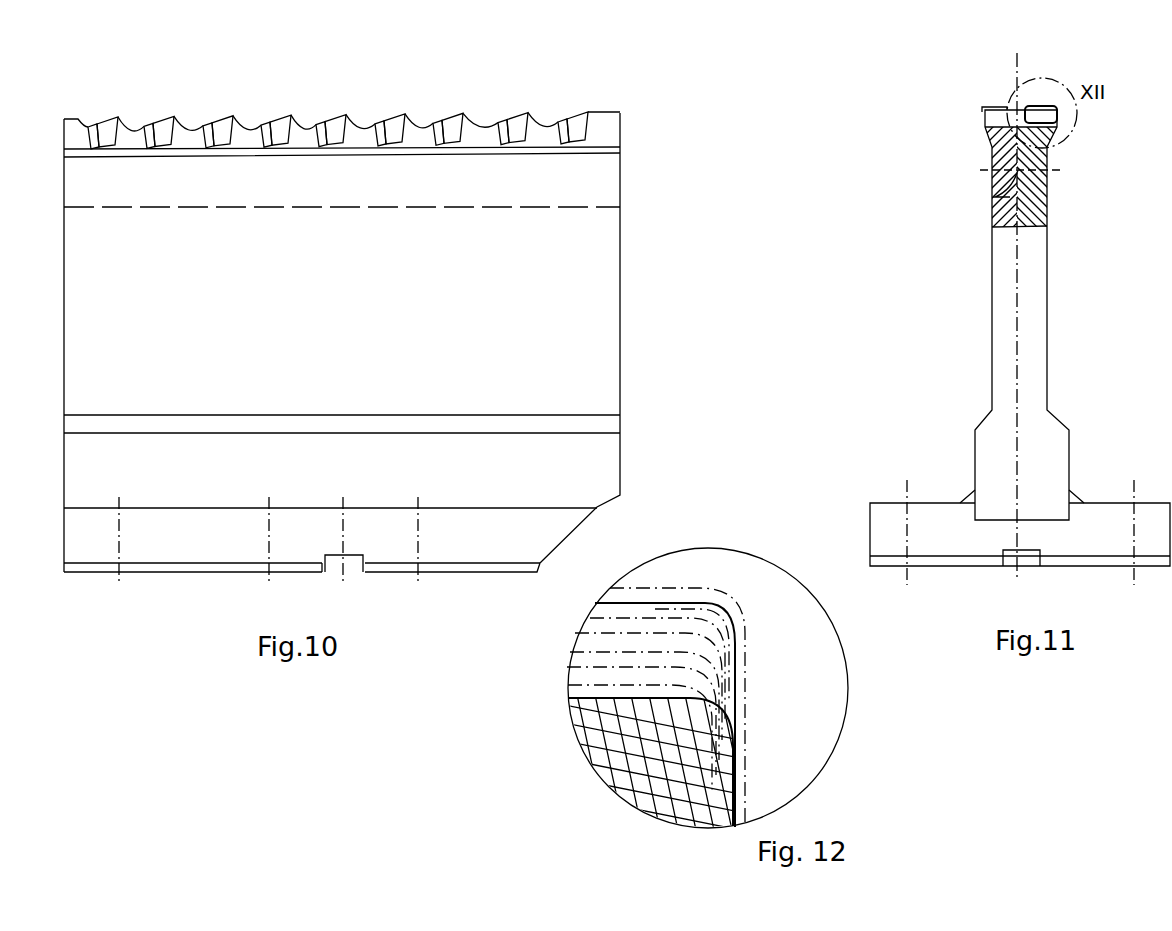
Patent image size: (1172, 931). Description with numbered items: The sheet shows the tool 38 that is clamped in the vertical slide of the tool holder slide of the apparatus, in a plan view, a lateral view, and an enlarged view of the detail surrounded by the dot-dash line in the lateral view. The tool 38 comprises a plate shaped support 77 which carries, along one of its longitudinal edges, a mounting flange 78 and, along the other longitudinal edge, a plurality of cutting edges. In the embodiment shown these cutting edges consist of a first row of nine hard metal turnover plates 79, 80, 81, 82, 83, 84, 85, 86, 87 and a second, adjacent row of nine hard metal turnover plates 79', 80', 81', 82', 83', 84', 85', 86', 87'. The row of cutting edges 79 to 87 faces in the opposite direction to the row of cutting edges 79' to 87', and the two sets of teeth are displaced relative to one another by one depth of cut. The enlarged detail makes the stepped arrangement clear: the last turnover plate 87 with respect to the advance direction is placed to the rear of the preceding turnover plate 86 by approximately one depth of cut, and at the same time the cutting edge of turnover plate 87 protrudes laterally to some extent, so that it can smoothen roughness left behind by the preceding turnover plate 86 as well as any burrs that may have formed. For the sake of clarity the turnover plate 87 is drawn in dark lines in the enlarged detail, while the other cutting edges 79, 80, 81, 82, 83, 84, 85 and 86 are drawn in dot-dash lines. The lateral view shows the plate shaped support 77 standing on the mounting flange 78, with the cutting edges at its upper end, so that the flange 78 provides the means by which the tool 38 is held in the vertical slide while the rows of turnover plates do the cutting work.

In FIG. 11, the tool 38 is at (965, 274).
In FIG. 10, the plate shaped support 77 is at (448, 329).
In FIG. 11, the plate shaped support 77 is at (1033, 308).
In FIG. 10, the mounting flange 78 is at (172, 555).
In FIG. 11, the mounting flange 78 is at (1105, 517).
In FIG. 10, the hard metal turnover plate 79 is at (81, 99).
In FIG. 12, the hard metal turnover plate 79 is at (636, 770).
In FIG. 10, the hard metal turnover plate 80 is at (138, 98).
In FIG. 12, the hard metal turnover plate 80 is at (612, 737).
In FIG. 10, the hard metal turnover plate 81 is at (197, 98).
In FIG. 12, the hard metal turnover plate 81 is at (616, 721).
In FIG. 10, the hard metal turnover plate 82 is at (256, 98).
In FIG. 12, the hard metal turnover plate 82 is at (618, 700).
In FIG. 10, the hard metal turnover plate 83 is at (315, 98).
In FIG. 12, the hard metal turnover plate 83 is at (623, 676).
In FIG. 10, the hard metal turnover plate 84 is at (371, 97).
In FIG. 12, the hard metal turnover plate 84 is at (629, 653).
In FIG. 10, the hard metal turnover plate 85 is at (428, 97).
In FIG. 12, the hard metal turnover plate 85 is at (645, 692).
In FIG. 10, the hard metal turnover plate 86 is at (494, 97).
In FIG. 12, the hard metal turnover plate 86 is at (663, 682).
In FIG. 10, the hard metal turnover plate 87 is at (553, 96).
In FIG. 12, the hard metal turnover plate 87 is at (681, 606).
In FIG. 10, the hard metal turnover plate 79' is at (586, 109).
In FIG. 10, the hard metal turnover plate 80' is at (524, 110).
In FIG. 10, the hard metal turnover plate 81' is at (459, 110).
In FIG. 10, the hard metal turnover plate 82' is at (401, 110).
In FIG. 10, the hard metal turnover plate 83' is at (340, 111).
In FIG. 10, the hard metal turnover plate 84' is at (281, 111).
In FIG. 10, the hard metal turnover plate 85' is at (226, 111).
In FIG. 10, the hard metal turnover plate 86' is at (172, 111).
In FIG. 10, the hard metal turnover plate 87' is at (108, 112).